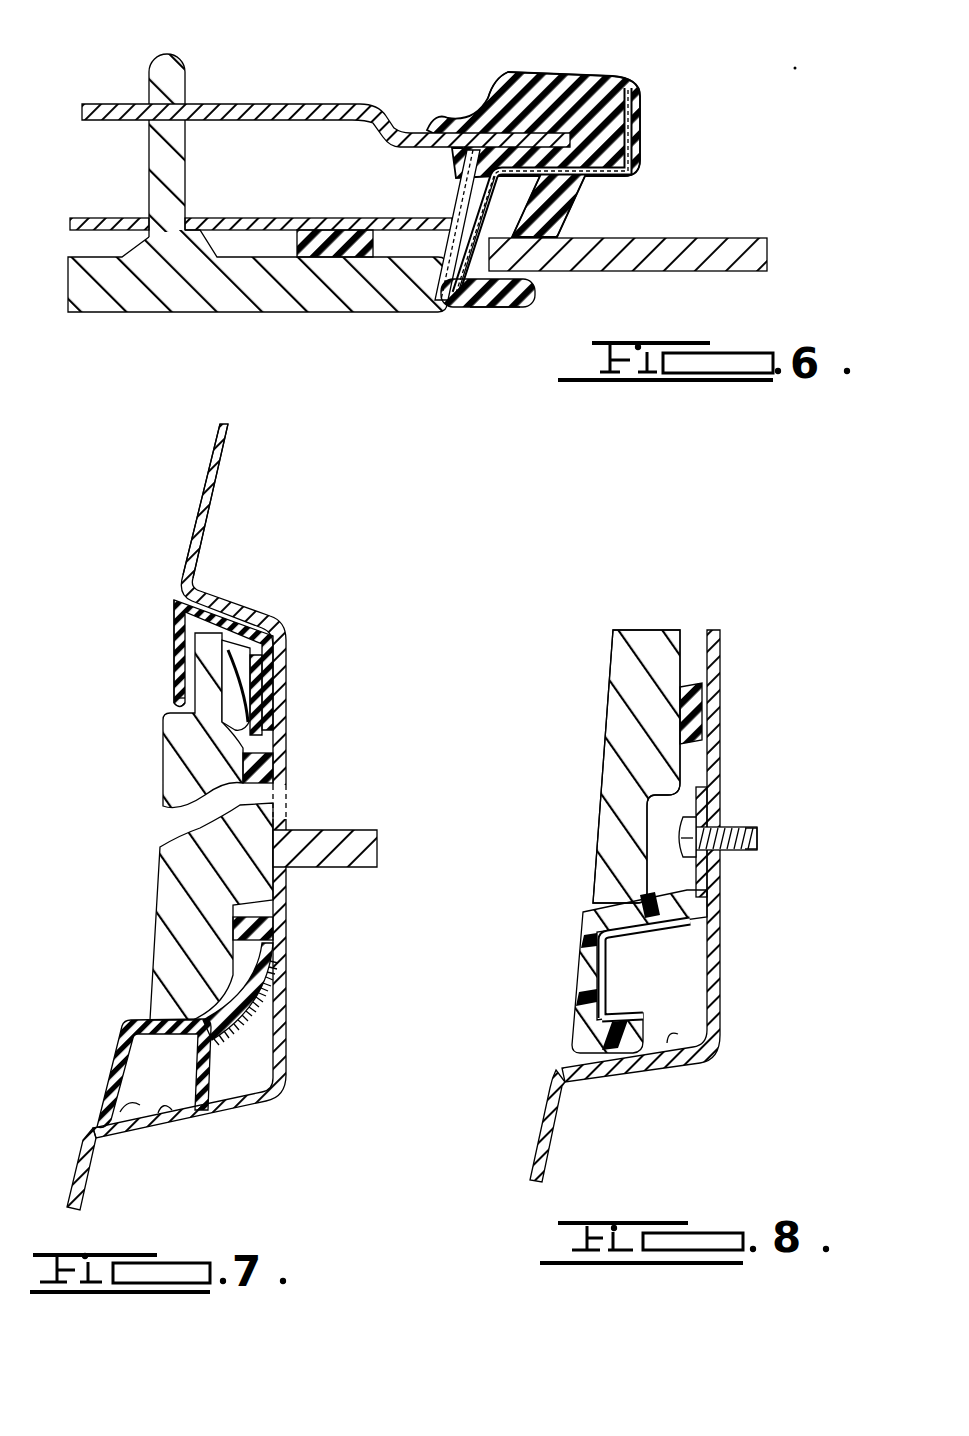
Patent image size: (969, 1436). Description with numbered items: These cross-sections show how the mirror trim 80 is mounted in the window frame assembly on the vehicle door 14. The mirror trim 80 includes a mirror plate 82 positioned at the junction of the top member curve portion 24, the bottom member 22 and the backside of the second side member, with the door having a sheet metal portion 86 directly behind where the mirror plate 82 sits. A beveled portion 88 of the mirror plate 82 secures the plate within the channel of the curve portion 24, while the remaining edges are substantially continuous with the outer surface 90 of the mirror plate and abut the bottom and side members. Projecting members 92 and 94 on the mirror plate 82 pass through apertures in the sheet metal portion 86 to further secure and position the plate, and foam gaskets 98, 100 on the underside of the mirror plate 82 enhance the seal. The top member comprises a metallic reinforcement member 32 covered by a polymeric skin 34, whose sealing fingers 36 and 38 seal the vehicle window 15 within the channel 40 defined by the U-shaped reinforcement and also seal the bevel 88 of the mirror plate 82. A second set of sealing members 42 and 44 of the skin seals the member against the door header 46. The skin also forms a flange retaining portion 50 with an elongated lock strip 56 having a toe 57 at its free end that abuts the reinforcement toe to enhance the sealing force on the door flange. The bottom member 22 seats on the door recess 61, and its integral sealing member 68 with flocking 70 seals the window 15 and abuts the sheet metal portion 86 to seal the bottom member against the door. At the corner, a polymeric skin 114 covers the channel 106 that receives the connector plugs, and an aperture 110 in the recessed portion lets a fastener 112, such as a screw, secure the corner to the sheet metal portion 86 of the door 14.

In FIG. 7, the door 14 is at (80, 1183).
In FIG. 8, the door 14 is at (541, 1128).
In FIG. 6, the vehicle window 15 is at (681, 240).
In FIG. 7, the bottom member 22 is at (114, 1050).
In FIG. 7, the curve portion 24 is at (170, 590).
In FIG. 6, the reinforcement member 32 is at (481, 306).
In FIG. 6, the polymeric skin 34 is at (536, 294).
In FIG. 7, the polymeric skin 34 is at (172, 650).
In FIG. 6, the sealing finger 36 is at (498, 306).
In FIG. 7, the sealing finger 36 is at (172, 690).
In FIG. 6, the sealing finger 38 is at (566, 224).
In FIG. 7, the sealing finger 38 is at (262, 680).
In FIG. 6, the channel 40 is at (531, 213).
In FIG. 6, the sealing member 42 is at (462, 210).
In FIG. 6, the sealing member 44 is at (446, 300).
In FIG. 7, the door header 46 is at (206, 472).
In FIG. 6, the flange retaining portion 50 is at (487, 62).
In FIG. 6, the lock strip 56 is at (557, 88).
In FIG. 6, the toe 57 is at (573, 113).
In FIG. 7, the door recess 61 is at (166, 1113).
In FIG. 8, the door recess 61 is at (673, 1037).
In FIG. 7, the sealing member 68 is at (274, 972).
In FIG. 7, the flocking 70 is at (252, 1037).
In FIG. 7, the mirror trim 80 is at (110, 800).
In FIG. 6, the mirror plate 82 is at (254, 293).
In FIG. 7, the mirror plate 82 is at (178, 874).
In FIG. 8, the mirror plate 82 is at (624, 659).
In FIG. 6, the sheet metal portion 86 is at (243, 220).
In FIG. 7, the sheet metal portion 86 is at (282, 900).
In FIG. 8, the sheet metal portion 86 is at (721, 650).
In FIG. 7, the beveled portion 88 is at (212, 652).
In FIG. 7, the outer surface 90 is at (163, 747).
In FIG. 8, the outer surface 90 is at (606, 755).
In FIG. 7, the projecting member 92 is at (352, 832).
In FIG. 6, the projecting member 94 is at (186, 78).
In FIG. 7, the foam gasket 98 is at (278, 932).
In FIG. 8, the foam gasket 98 is at (704, 718).
In FIG. 6, the foam gasket 100 is at (323, 238).
In FIG. 7, the foam gasket 100 is at (276, 765).
In FIG. 8, the channel 106 is at (633, 1015).
In FIG. 8, the aperture 110 is at (722, 828).
In FIG. 8, the fastener 112 is at (752, 851).
In FIG. 8, the polymeric skin 114 is at (583, 1047).